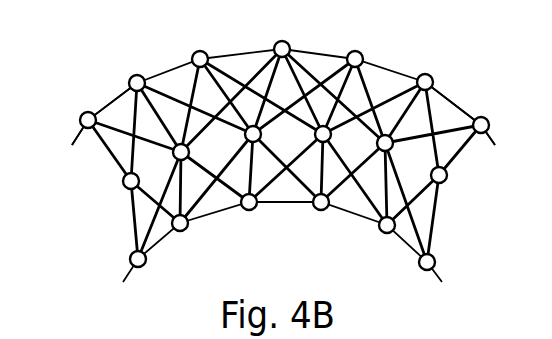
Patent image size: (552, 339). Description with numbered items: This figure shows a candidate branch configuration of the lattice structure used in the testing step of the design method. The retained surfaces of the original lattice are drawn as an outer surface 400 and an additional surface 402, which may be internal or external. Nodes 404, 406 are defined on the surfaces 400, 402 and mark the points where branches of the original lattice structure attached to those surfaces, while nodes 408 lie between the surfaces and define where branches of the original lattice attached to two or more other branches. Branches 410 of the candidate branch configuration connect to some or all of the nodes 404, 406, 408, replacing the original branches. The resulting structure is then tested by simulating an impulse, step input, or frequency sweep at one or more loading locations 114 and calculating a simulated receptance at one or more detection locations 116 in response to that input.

The outer surface 400 is at (282, 141).
The loading location 114 is at (103, 107).
The detection location 116 is at (447, 97).
The additional surface 402 is at (141, 232).
The node 404 is at (489, 116).
The node 406 is at (318, 211).
The node 408 is at (445, 185).
The branch 410 is at (100, 136).